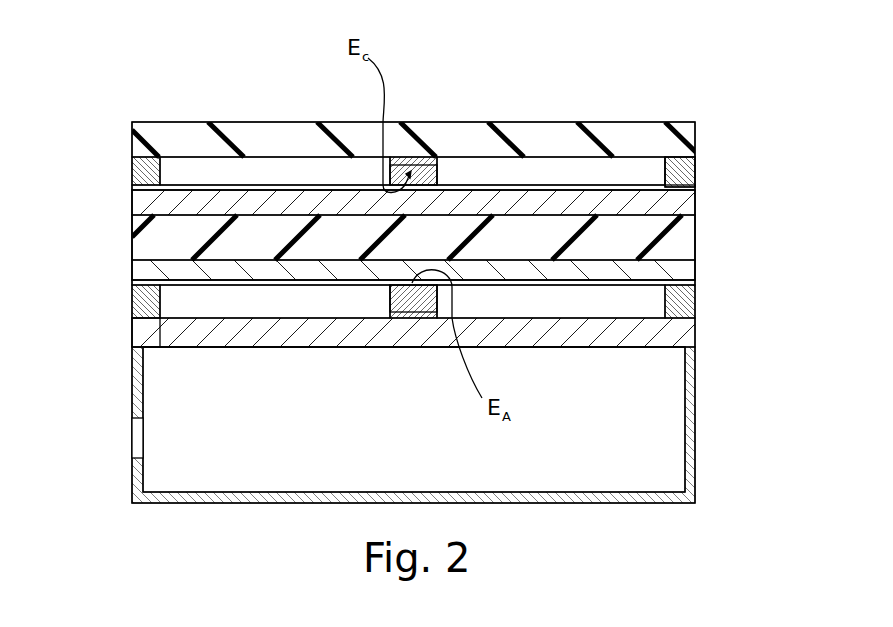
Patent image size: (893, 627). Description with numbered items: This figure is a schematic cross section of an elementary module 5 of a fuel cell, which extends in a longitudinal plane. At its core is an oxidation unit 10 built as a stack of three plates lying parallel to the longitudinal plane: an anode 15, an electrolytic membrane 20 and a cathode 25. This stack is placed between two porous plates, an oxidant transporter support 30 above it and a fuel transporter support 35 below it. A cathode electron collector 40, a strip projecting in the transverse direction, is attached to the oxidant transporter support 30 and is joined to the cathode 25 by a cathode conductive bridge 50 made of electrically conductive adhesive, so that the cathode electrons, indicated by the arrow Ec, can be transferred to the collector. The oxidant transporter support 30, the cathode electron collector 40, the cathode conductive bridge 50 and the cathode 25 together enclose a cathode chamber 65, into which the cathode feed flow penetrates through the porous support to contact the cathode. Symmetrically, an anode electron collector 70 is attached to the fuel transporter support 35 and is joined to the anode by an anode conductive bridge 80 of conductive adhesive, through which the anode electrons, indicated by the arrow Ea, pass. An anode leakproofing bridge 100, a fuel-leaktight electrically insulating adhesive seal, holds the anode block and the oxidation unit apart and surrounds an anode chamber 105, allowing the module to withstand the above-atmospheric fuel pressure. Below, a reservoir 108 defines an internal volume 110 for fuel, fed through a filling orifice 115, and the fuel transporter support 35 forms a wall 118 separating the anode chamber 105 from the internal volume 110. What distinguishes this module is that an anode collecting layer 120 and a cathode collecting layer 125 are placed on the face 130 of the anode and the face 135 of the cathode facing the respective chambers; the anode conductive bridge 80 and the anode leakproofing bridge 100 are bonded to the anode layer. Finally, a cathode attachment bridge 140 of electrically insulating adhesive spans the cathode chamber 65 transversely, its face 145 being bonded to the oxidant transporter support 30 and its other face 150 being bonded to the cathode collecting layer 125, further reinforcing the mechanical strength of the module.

The elementary module 5 is at (111, 87).
The oxidation unit 10 is at (695, 232).
The anode 15 is at (132, 272).
The electrolytic membrane 20 is at (695, 252).
The cathode 25 is at (695, 207).
The oxidant transporter support 30 is at (538, 138).
The fuel transporter support 35 is at (697, 323).
The cathode electron collector 40 is at (436, 150).
The cathode conductive bridge 50 is at (416, 162).
The cathode chamber 65 is at (585, 172).
The anode electron collector 70 is at (413, 299).
The anode conductive bridge 80 is at (372, 347).
The anode leakproofing bridge 100 is at (132, 302).
The anode chamber 105 is at (580, 303).
The reservoir 108 is at (527, 497).
The internal volume 110 is at (605, 472).
The filling orifice 115 is at (132, 452).
The wall 118 is at (223, 347).
The anode collecting layer 120 is at (593, 287).
The cathode collecting layer 125 is at (630, 183).
The face of the anode 130 is at (132, 340).
The face of the cathode 135 is at (277, 183).
The cathode attachment bridge 140 is at (695, 172).
The face of the cathode attachment bridge 145 is at (153, 122).
The face of the cathode attachment bridge 150 is at (132, 213).